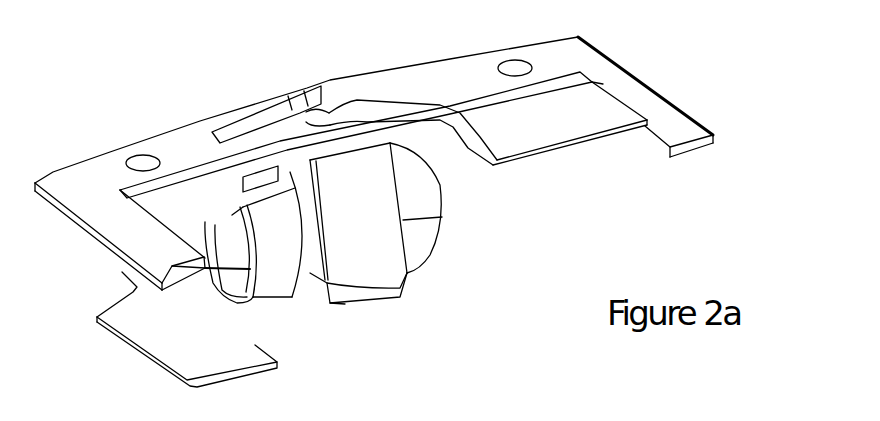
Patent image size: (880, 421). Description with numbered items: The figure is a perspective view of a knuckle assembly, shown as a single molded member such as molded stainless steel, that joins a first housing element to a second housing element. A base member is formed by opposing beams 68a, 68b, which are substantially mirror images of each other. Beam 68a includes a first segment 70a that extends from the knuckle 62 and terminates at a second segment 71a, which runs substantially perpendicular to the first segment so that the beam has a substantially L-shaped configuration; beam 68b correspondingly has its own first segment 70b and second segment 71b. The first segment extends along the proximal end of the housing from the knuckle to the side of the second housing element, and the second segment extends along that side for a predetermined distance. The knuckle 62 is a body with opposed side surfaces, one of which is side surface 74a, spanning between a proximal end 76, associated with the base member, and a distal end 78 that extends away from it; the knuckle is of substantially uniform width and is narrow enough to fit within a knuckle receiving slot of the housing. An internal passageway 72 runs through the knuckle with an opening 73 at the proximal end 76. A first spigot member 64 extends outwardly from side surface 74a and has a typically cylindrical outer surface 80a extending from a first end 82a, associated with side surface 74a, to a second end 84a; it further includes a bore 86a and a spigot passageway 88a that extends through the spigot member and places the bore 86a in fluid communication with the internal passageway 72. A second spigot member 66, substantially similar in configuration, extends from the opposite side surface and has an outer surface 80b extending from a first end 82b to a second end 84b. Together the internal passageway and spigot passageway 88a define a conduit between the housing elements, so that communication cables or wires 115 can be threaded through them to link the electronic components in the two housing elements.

The knuckle 62 is at (370, 308).
The first spigot member 64 is at (263, 307).
The second spigot member 66 is at (440, 173).
The opposing beam 68a is at (131, 271).
The opposing beam 68b is at (695, 163).
The first segment 70a is at (122, 133).
The right plate portion 70b is at (472, 53).
The second segment 71a is at (110, 255).
The right flange 71b is at (688, 113).
The internal passageway 72 is at (289, 97).
The opening 73 is at (305, 95).
The side surface 74a is at (310, 302).
The proximal end 76 is at (329, 77).
The distal end 78 is at (385, 302).
The outer surface 80a is at (277, 297).
The outer surface 80b is at (422, 237).
The first end 82a is at (400, 288).
The first end 82b is at (437, 212).
The second end 84a is at (278, 272).
The second end 84b is at (437, 198).
The bore 86a is at (220, 210).
The spigot passageway 88a is at (226, 210).
The communication cables or wires 115 is at (602, 100).